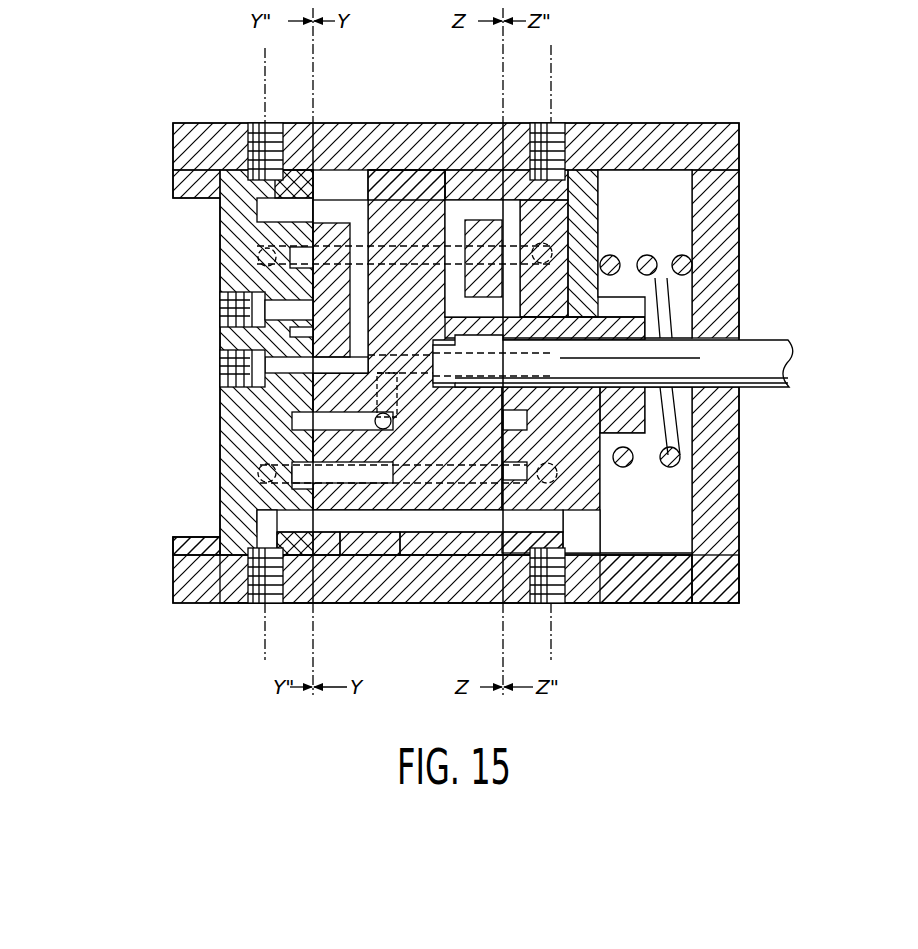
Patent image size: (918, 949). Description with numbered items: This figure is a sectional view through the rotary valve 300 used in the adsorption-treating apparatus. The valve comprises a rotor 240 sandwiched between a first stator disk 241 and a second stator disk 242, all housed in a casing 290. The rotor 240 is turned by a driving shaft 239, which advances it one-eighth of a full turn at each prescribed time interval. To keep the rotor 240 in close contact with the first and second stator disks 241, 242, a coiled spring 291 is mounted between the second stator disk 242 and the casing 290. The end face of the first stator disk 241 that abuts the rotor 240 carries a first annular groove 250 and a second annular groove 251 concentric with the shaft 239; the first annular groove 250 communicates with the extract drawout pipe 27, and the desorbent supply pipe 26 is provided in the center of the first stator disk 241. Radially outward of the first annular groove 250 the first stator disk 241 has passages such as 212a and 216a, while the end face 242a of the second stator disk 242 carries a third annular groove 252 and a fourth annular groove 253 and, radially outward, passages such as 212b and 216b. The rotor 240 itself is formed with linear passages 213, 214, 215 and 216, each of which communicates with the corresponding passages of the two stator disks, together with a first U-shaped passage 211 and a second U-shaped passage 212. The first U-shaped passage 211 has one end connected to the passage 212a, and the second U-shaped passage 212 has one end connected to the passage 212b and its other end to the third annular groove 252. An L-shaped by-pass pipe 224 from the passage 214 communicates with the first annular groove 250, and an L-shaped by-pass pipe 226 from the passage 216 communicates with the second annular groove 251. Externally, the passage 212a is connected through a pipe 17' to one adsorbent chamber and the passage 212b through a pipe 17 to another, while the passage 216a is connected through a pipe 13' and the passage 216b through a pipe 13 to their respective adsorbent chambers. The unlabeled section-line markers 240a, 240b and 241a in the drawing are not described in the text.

The rotary valve 300 is at (708, 118).
The casing 290 is at (737, 165).
The coiled spring 291 is at (697, 300).
The driving shaft 239 is at (775, 386).
The first U-shaped passage 211 is at (340, 123).
The second U-shaped passage 212 is at (452, 123).
The passage 212a is at (266, 197).
The passage 212b is at (584, 195).
The linear passage 213 is at (392, 123).
The linear passage 214 is at (391, 421).
The linear passage 215 is at (373, 603).
The linear passage 216 is at (418, 603).
The passage 216a is at (232, 560).
The passage 216b is at (590, 560).
The L-shaped by-pass pipe 224 is at (398, 440).
The L-shaped by-pass pipe 226 is at (338, 603).
The rotor 240 is at (447, 603).
The slot 240a is at (293, 470).
The wall 240b is at (553, 200).
The first stator disk 241 is at (262, 532).
The upper channel 241a is at (375, 123).
The second stator disk 242 is at (598, 528).
The end face 242a is at (486, 124).
The first annular groove 250 is at (291, 333).
The second annular groove 251 is at (291, 256).
The third annular groove 252 is at (520, 310).
The fourth annular groove 253 is at (518, 243).
The desorbent supply pipe 26 is at (226, 372).
The extract drawout pipe 27 is at (225, 308).
The pipe 17 is at (588, 84).
The pipe 17' is at (228, 84).
The pipe 13 is at (580, 631).
The pipe 13' is at (238, 631).